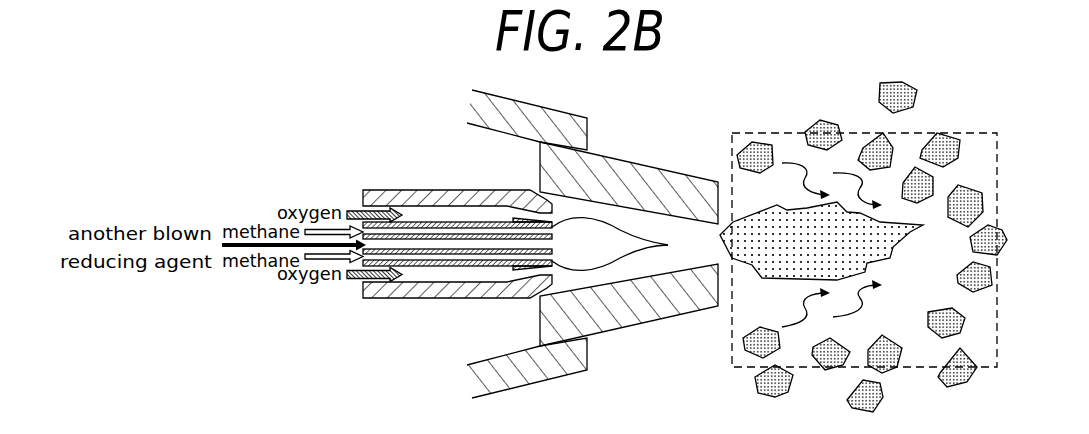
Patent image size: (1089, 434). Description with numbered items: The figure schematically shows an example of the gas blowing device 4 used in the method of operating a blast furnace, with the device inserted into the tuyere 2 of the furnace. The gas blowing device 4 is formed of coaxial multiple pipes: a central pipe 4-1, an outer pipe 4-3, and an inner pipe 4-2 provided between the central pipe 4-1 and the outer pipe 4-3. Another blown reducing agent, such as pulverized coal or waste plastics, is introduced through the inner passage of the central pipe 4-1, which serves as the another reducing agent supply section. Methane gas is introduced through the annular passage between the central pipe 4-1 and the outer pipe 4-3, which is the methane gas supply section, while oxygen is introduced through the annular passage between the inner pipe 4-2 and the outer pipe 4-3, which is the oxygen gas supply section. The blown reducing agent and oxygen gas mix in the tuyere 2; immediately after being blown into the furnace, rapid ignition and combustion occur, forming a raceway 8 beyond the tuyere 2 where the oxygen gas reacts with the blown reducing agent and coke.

The tuyere 2 is at (677, 173).
The gas blowing device 4 is at (474, 248).
The central pipe 4-1 is at (552, 237).
The inner pipe 4-2 is at (628, 244).
The outer pipe 4-3 is at (412, 190).
The raceway 8 is at (1000, 323).